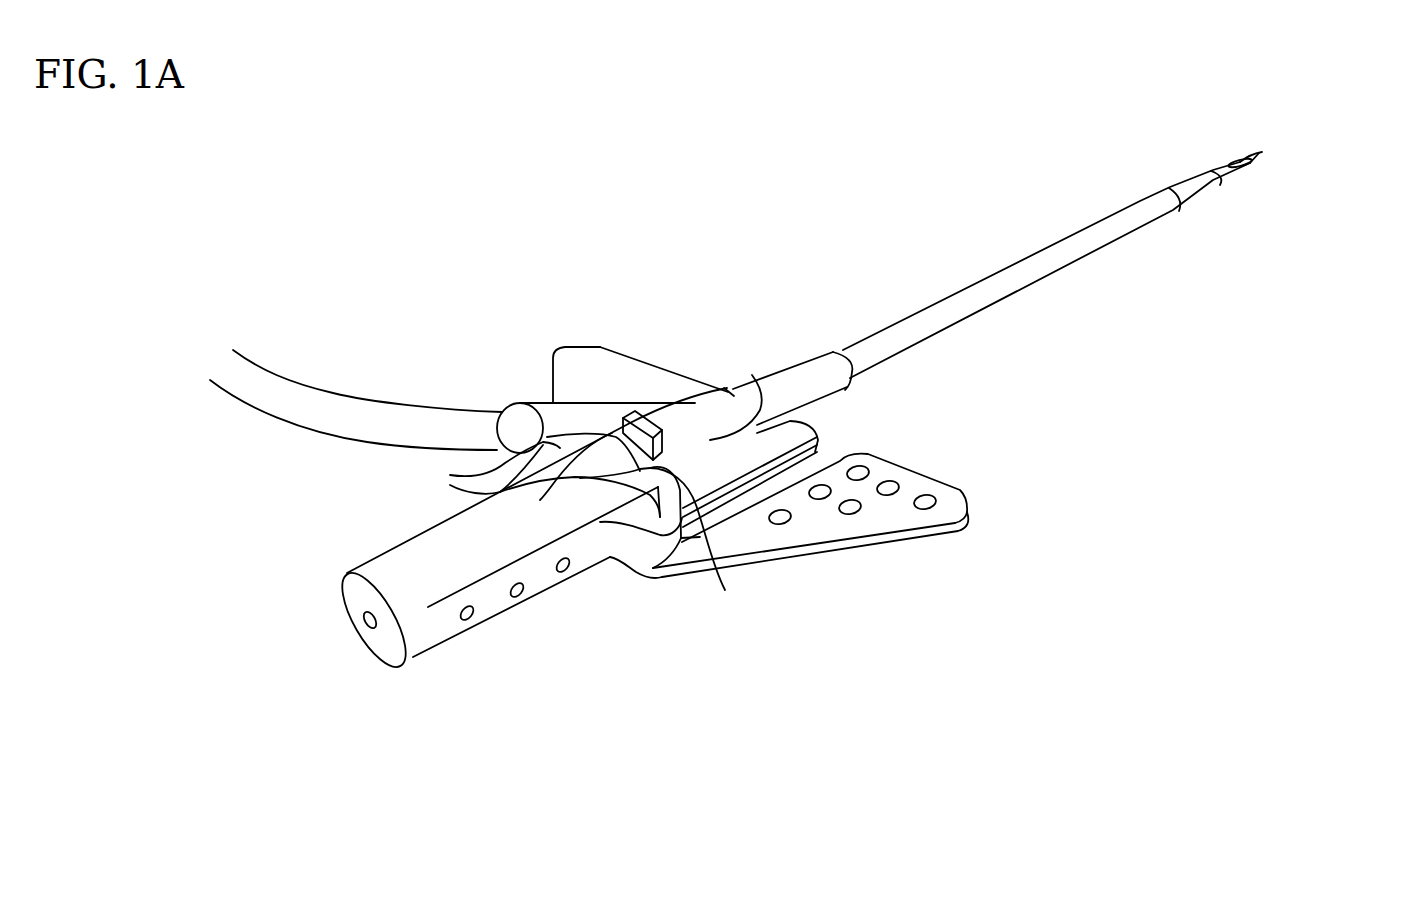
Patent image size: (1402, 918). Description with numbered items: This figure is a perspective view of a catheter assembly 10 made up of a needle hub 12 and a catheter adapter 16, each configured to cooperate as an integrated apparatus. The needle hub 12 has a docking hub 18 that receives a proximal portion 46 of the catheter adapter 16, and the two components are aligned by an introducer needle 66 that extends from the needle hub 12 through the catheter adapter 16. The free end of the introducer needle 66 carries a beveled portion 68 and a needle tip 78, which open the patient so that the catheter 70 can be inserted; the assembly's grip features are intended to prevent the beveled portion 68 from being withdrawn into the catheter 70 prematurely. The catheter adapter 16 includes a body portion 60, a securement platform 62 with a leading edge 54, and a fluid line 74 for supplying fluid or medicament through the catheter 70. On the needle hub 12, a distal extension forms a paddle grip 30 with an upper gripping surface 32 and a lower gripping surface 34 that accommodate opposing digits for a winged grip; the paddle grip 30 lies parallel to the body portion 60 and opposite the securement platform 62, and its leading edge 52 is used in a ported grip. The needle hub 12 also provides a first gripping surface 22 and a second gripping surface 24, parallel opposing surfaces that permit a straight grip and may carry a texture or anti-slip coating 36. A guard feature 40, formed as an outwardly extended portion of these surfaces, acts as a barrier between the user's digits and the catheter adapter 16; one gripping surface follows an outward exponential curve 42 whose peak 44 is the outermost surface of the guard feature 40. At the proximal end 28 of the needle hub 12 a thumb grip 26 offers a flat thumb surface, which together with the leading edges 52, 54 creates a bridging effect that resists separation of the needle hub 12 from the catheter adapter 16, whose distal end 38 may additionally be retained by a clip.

The catheter assembly 10 is at (799, 432).
The needle hub 12 is at (497, 607).
The catheter adapter 16 is at (731, 393).
The docking hub 18 is at (620, 420).
The first gripping surface 22 is at (393, 550).
The second gripping surface 24 is at (540, 573).
The thumb grip 26 is at (363, 620).
The proximal end 28 is at (410, 643).
The paddle grip 30 is at (970, 490).
The upper gripping surface 32 is at (913, 480).
The lower gripping surface 34 is at (950, 535).
The texture or anti-slip coating 36 is at (380, 653).
The distal end 38 is at (725, 590).
The guard feature 40 is at (538, 475).
The exponential curve 42 is at (613, 550).
The peak 44 is at (546, 432).
The proximal portion 46 is at (673, 462).
The leading edge 52 is at (907, 465).
The leading edge 54 is at (648, 363).
The body portion 60 is at (756, 446).
The securement platform 62 is at (572, 347).
The introducer needle 66 is at (1215, 168).
The beveled portion 68 is at (1243, 157).
The catheter 70 is at (1118, 223).
The fluid line 74 is at (287, 395).
The needle tip 78 is at (1262, 152).